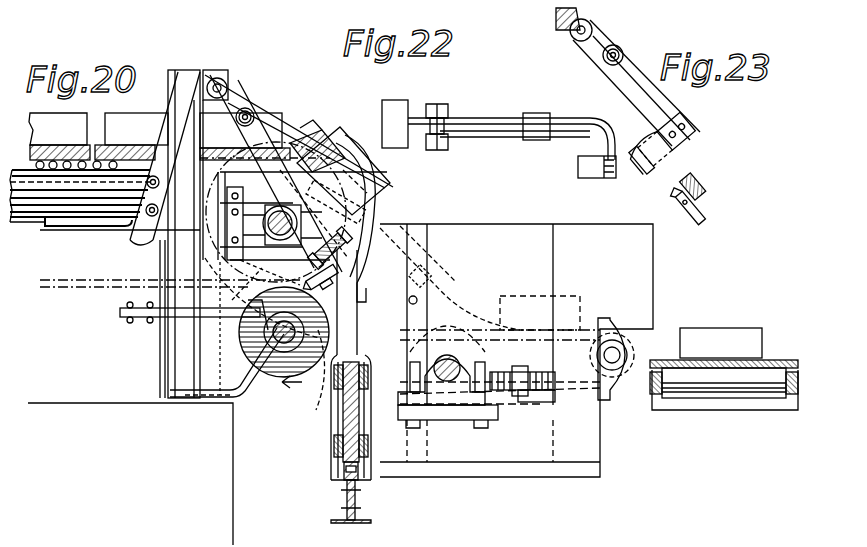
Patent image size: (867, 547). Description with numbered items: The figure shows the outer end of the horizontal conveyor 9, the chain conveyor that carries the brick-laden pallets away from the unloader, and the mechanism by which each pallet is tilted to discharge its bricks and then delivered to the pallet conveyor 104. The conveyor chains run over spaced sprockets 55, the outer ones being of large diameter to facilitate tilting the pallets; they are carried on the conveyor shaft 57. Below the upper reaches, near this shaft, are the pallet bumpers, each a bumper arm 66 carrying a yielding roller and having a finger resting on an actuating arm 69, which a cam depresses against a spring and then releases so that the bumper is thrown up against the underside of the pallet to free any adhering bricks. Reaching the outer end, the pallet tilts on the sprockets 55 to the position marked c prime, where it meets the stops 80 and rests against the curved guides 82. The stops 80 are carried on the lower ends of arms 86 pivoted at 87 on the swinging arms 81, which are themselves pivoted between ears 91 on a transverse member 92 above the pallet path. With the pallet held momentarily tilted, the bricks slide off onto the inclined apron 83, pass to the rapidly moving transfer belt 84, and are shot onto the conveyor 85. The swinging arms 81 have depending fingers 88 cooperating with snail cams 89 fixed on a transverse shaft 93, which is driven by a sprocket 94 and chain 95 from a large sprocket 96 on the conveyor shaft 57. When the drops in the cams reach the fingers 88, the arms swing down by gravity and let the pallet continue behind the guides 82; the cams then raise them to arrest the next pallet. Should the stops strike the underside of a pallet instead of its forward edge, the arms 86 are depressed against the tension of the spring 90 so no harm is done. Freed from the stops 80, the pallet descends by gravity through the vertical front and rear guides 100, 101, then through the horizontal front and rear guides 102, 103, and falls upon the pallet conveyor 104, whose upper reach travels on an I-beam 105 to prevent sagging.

In FIG. 20, the horizontal conveyor 9 is at (30, 146).
In FIG. 20, the bumper arm 66 is at (33, 198).
In FIG. 20, the actuating arm 69 is at (92, 224).
In FIG. 20, the transverse member 92 is at (208, 70).
In FIG. 23, the transverse member 92 is at (556, 15).
In FIG. 20, the ears 91 is at (222, 78).
In FIG. 23, the ears 91 is at (572, 38).
In FIG. 20, the swinging arms 81 is at (246, 95).
In FIG. 22, the swinging arms 81 is at (497, 120).
In FIG. 23, the swinging arms 81 is at (598, 33).
In FIG. 20, the pivot 87 is at (262, 128).
In FIG. 22, the pivot 87 is at (440, 104).
In FIG. 23, the pivot 87 is at (623, 52).
In FIG. 20, the arms 86 is at (263, 127).
In FIG. 22, the arms 86 is at (492, 136).
In FIG. 23, the arms 86 is at (630, 100).
In FIG. 20, the conveyor shaft 57 is at (281, 206).
In FIG. 20, the spring 90 is at (322, 248).
In FIG. 23, the spring 90 is at (686, 185).
In FIG. 20, the stops 80 is at (373, 233).
In FIG. 22, the stops 80 is at (586, 178).
In FIG. 23, the stops 80 is at (726, 162).
In FIG. 20, the curved guides 82 is at (345, 150).
In FIG. 22, the curved guides 82 is at (395, 124).
In FIG. 20, the depending fingers 88 is at (343, 279).
In FIG. 23, the depending fingers 88 is at (700, 203).
In FIG. 20, the chain 95 is at (268, 334).
In FIG. 20, the transverse shaft 93 is at (290, 270).
In FIG. 20, the large sprocket 96 is at (261, 298).
In FIG. 20, the sprockets 55 is at (245, 332).
In FIG. 20, the snail cams 89 is at (275, 378).
In FIG. 20, the sprocket 94 is at (327, 341).
In FIG. 20, the vertical rear guide 101 is at (358, 328).
In FIG. 20, the vertical front guide 100 is at (362, 348).
In FIG. 20, the horizontal front guide 102 is at (362, 385).
In FIG. 20, the horizontal rear guide 103 is at (335, 446).
In FIG. 20, the pallet conveyor 104 is at (340, 472).
In FIG. 20, the I-beam 105 is at (353, 524).
In FIG. 20, the inclined apron 83 is at (516, 350).
In FIG. 20, the transfer belt 84 is at (628, 335).
In FIG. 20, the conveyor 85 is at (660, 358).